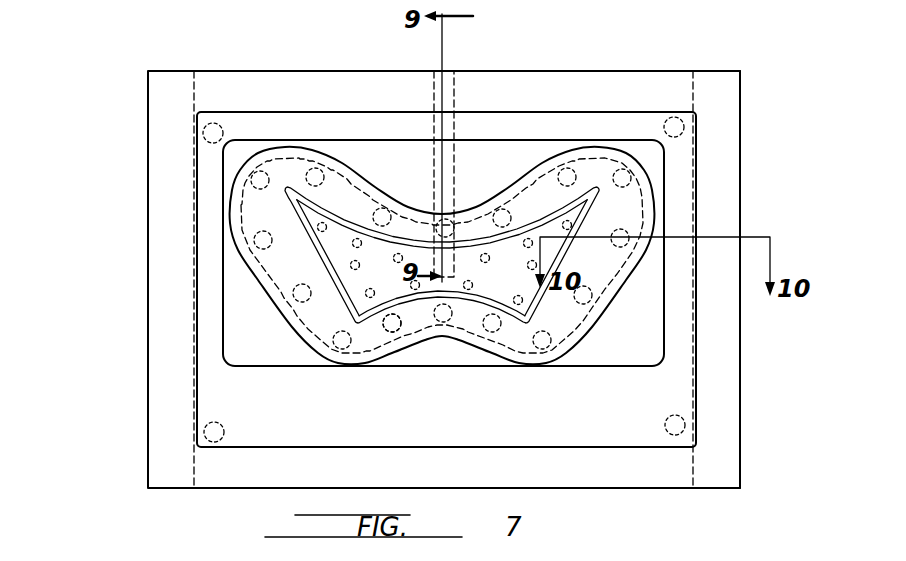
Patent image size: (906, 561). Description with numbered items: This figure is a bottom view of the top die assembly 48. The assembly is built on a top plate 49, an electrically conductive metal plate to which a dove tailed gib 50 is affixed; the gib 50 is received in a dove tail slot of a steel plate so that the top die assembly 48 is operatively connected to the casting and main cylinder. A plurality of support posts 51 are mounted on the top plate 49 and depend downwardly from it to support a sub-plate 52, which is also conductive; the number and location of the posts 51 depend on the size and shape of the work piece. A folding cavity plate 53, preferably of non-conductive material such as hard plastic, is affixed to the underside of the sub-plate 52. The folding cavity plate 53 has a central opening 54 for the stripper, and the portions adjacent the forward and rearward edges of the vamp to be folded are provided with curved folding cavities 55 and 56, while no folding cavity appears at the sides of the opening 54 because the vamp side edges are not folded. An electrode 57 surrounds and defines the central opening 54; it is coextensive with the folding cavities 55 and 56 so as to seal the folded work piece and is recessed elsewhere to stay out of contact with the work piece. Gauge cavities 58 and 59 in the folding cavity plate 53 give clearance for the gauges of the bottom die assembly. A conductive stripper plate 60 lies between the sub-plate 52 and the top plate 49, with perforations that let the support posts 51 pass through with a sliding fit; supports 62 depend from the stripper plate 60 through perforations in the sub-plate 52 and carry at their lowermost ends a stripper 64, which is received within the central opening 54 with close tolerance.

The top die assembly 48 is at (612, 70).
The top plate 49 is at (697, 83).
The dove tailed gib 50 is at (447, 90).
The support posts 51 is at (205, 130).
The sub-plate 52 is at (608, 432).
The folding cavity plate 53 is at (239, 143).
The central opening 54 is at (587, 218).
The folding cavity 55 is at (475, 240).
The folding cavity 56 is at (483, 304).
The electrode 57 is at (348, 297).
The gauge cavity 58 is at (405, 215).
The gauge cavity 59 is at (420, 316).
The stripper plate 60 is at (728, 365).
The supports 62 is at (350, 263).
The stripper 64 is at (505, 288).